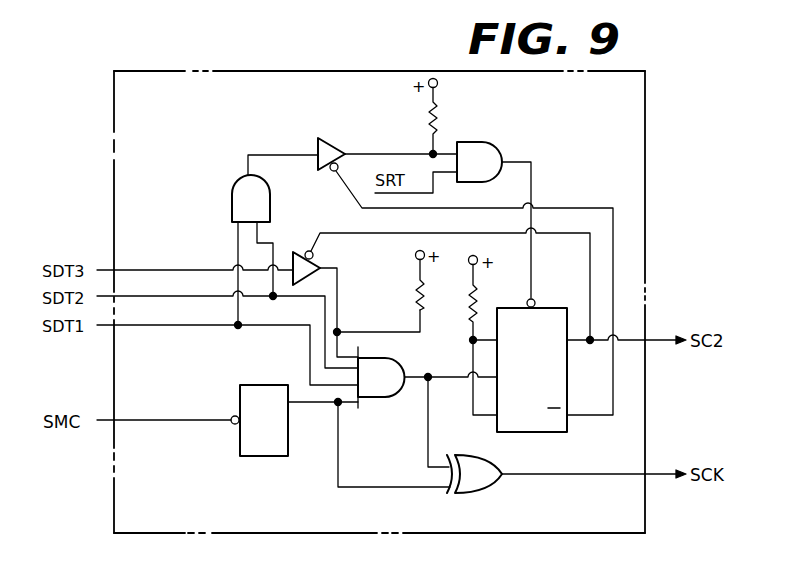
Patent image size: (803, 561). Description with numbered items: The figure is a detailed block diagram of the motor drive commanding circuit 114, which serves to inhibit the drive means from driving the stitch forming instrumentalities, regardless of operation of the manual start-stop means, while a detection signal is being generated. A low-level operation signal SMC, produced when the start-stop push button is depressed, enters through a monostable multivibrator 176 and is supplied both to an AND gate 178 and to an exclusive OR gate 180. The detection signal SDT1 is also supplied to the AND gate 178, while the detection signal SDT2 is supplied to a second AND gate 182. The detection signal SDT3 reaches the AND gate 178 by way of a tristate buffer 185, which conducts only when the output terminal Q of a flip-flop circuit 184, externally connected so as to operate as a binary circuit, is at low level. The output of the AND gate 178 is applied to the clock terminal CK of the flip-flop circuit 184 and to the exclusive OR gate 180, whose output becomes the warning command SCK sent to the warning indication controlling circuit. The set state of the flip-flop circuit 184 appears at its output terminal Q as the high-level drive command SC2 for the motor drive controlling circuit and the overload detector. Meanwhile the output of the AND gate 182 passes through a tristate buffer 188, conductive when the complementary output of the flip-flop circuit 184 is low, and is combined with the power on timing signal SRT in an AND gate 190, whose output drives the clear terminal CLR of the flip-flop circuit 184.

The motor drive commanding circuit 114 is at (114, 160).
The monostable multivibrator 176 is at (266, 450).
The AND gate 178 is at (388, 398).
The exclusive OR gate 180 is at (483, 488).
The AND gate 182 is at (270, 205).
The flip-flop circuit 184 is at (540, 430).
The tristate buffer 185 is at (316, 256).
The tristate buffer 188 is at (328, 147).
The AND gate 190 is at (483, 148).